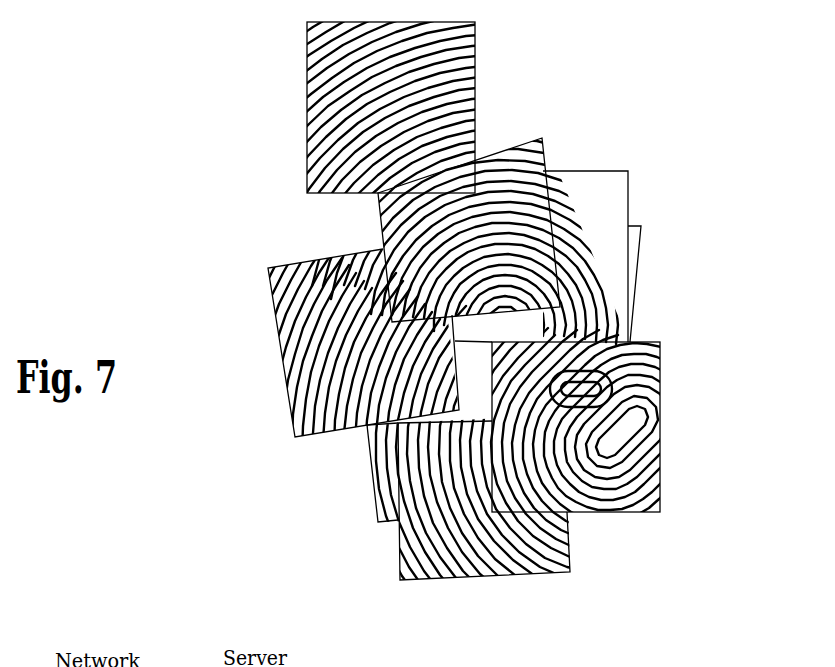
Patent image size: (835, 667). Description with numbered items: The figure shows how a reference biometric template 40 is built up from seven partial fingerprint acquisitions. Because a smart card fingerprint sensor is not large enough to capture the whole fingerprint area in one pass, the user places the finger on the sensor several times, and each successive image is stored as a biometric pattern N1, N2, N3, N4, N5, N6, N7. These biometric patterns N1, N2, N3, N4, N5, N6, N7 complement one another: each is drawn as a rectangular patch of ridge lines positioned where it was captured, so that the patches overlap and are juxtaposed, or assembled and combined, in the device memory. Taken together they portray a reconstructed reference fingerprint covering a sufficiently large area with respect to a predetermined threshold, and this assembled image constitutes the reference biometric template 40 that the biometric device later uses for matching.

The reference biometric template 40 is at (716, 516).
The biometric pattern N1 is at (475, 65).
The biometric pattern N2 is at (528, 143).
The biometric pattern N3 is at (288, 395).
The biometric pattern N4 is at (661, 447).
The biometric pattern N5 is at (445, 582).
The biometric pattern N6 is at (372, 470).
The biometric pattern N7 is at (608, 170).